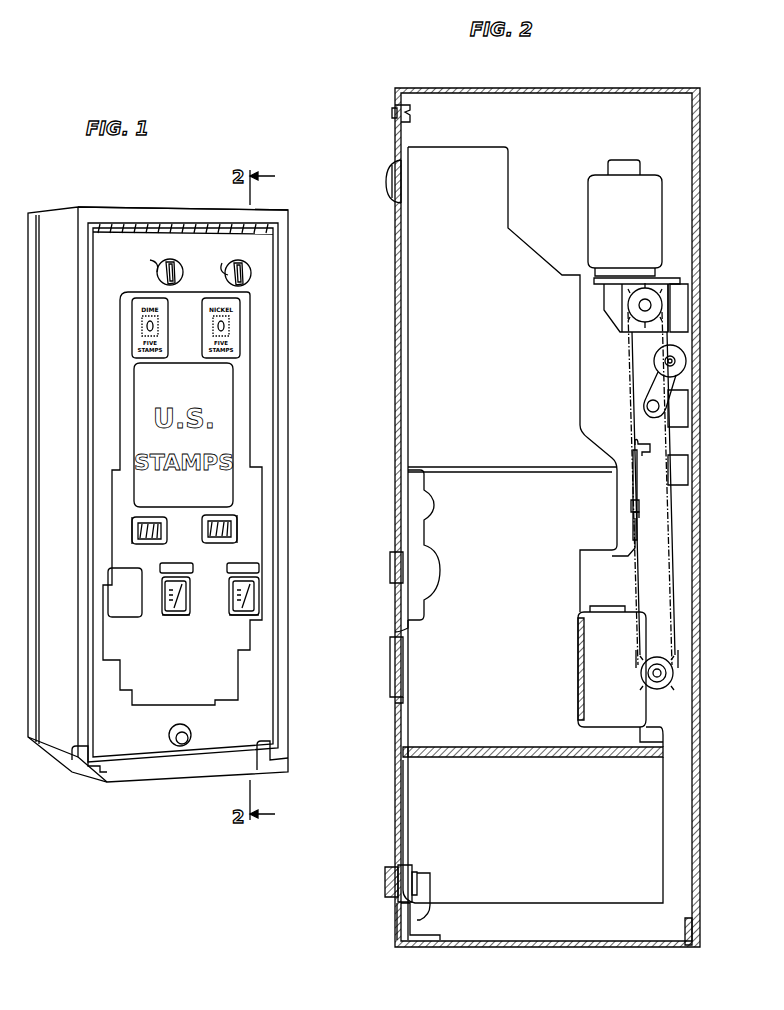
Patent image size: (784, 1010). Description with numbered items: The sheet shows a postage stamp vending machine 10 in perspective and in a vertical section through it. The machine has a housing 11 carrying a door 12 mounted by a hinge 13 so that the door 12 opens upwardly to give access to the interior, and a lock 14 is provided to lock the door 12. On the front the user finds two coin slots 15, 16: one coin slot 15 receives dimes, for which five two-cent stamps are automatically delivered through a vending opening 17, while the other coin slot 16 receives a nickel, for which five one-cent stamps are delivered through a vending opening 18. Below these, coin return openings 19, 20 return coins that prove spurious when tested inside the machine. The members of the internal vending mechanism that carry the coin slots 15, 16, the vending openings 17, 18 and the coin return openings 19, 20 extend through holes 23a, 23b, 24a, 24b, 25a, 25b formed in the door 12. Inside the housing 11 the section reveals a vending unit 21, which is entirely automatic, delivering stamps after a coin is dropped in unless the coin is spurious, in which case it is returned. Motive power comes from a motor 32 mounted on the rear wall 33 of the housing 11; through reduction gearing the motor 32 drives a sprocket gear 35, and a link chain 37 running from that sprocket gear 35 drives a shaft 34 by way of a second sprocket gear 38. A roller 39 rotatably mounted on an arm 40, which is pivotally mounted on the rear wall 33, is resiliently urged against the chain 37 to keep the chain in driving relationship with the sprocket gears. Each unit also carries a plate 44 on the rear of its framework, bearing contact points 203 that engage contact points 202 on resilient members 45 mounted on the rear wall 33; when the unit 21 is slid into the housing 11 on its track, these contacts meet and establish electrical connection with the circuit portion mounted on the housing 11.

In FIG. 1, the vending machine 10 is at (292, 296).
In FIG. 1, the housing 11 is at (118, 205).
In FIG. 1, the door 12 is at (262, 398).
In FIG. 1, the hinge 13 is at (258, 225).
In FIG. 1, the lock 14 is at (175, 745).
In FIG. 2, the lock 14 is at (385, 881).
In FIG. 1, the coin slot 15 is at (170, 270).
In FIG. 1, the coin slot 16 is at (252, 273).
In FIG. 1, the vending opening 17 is at (133, 537).
In FIG. 1, the vending opening 18 is at (238, 531).
In FIG. 1, the coin return opening 19 is at (172, 600).
In FIG. 1, the coin return opening 20 is at (248, 596).
In FIG. 2, the vending unit 21 is at (514, 226).
In FIG. 1, the hole 23a is at (150, 262).
In FIG. 2, the hole 23a is at (399, 206).
In FIG. 1, the hole 23b is at (214, 260).
In FIG. 1, the hole 24a is at (132, 533).
In FIG. 2, the hole 24a is at (392, 558).
In FIG. 1, the hole 24b is at (234, 524).
In FIG. 1, the hole 25a is at (162, 616).
In FIG. 2, the hole 25a is at (393, 700).
In FIG. 1, the hole 25b is at (260, 618).
In FIG. 2, the motor 32 is at (650, 195).
In FIG. 2, the rear wall 33 is at (700, 127).
In FIG. 2, the shaft 34 is at (662, 682).
In FIG. 2, the sprocket gear 35 is at (652, 303).
In FIG. 2, the link chain 37 is at (675, 574).
In FIG. 2, the sprocket gear 38 is at (674, 672).
In FIG. 2, the roller 39 is at (678, 362).
In FIG. 2, the arm 40 is at (672, 388).
In FIG. 2, the plate 44 is at (631, 506).
In FIG. 2, the resilient member 45 is at (632, 484).
In FIG. 2, the contact point 202 is at (640, 512).
In FIG. 2, the contact point 203 is at (632, 527).